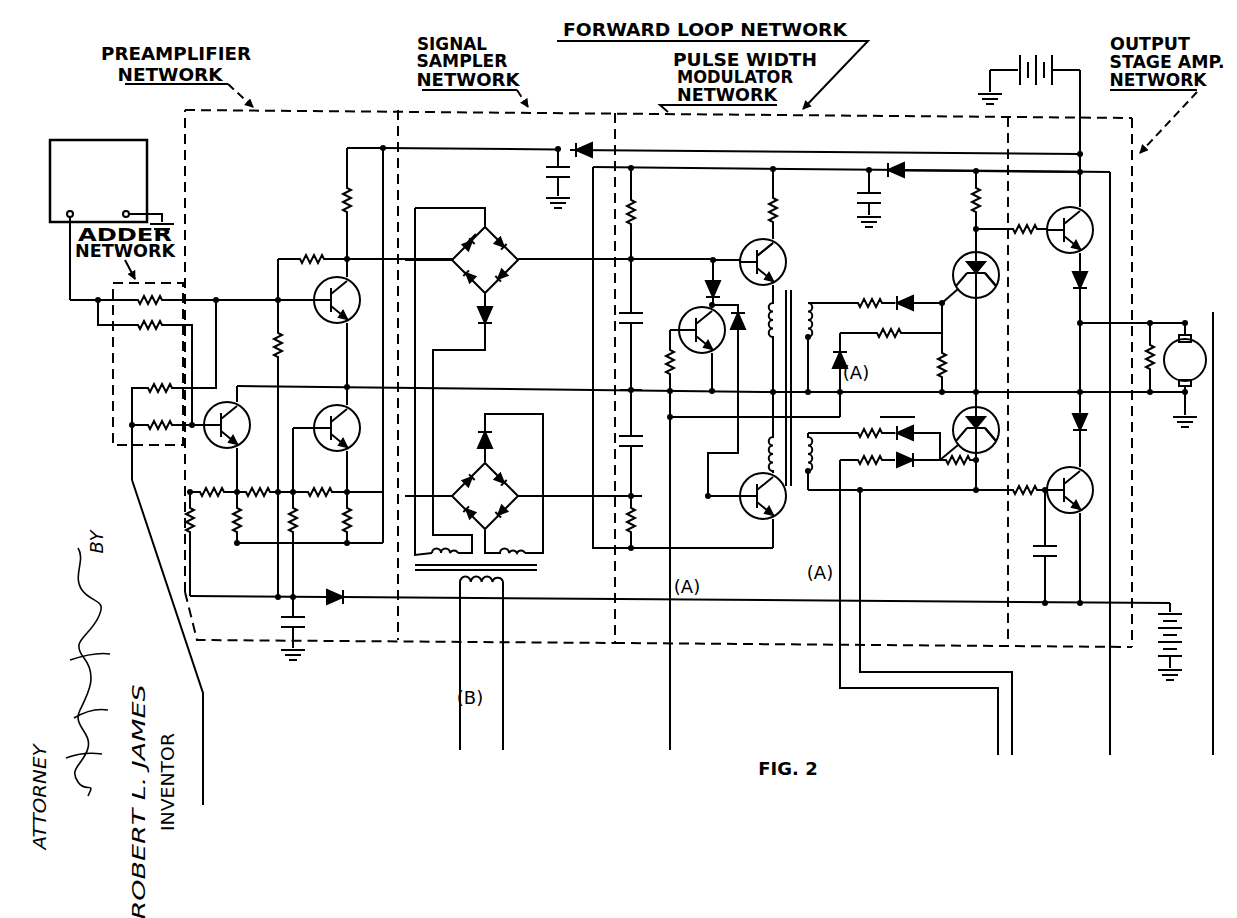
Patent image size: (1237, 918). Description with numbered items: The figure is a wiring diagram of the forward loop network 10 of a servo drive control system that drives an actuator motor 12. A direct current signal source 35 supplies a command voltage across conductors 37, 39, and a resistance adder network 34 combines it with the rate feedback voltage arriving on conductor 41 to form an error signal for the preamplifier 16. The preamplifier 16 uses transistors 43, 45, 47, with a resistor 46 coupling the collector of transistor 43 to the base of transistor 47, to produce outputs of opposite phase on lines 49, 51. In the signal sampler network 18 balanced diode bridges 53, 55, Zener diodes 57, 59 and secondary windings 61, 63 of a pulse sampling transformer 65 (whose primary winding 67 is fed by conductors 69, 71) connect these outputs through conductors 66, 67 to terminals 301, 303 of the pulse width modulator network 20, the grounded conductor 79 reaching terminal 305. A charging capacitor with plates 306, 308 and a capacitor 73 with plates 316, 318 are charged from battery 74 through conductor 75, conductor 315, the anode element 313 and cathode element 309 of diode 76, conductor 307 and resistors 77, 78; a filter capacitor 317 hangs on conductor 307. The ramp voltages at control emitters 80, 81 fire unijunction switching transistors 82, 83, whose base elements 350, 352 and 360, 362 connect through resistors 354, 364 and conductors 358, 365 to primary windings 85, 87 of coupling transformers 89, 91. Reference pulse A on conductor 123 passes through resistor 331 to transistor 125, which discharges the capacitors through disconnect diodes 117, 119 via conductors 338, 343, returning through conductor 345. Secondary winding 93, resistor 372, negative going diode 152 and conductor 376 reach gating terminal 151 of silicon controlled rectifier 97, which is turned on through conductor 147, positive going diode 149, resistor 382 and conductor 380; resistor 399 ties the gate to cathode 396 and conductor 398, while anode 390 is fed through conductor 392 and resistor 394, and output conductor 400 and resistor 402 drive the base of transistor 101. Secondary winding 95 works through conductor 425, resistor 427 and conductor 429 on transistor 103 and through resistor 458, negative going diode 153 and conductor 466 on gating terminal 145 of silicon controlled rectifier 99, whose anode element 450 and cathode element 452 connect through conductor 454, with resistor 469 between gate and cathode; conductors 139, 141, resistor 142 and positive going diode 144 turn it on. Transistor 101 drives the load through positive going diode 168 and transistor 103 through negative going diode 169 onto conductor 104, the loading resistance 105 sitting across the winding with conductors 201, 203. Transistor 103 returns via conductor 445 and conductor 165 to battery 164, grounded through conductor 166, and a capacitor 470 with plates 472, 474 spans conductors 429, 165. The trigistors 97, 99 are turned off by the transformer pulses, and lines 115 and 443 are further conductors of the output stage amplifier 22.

The forward loop network 10 is at (176, 121).
The actuator motor 12 is at (1187, 368).
The preamplifier 16 is at (318, 106).
The signal sampler network 18 is at (596, 106).
The pulse width modulator network 20 is at (876, 114).
The output stage amplifier 22 is at (1140, 203).
The resistance adder network 34 is at (113, 370).
The direct current signal source 35 is at (88, 139).
The input conductor 37 is at (70, 276).
The conductor 39 is at (152, 212).
The conductor 41 is at (132, 470).
The transistor 43 is at (232, 401).
The transistor 45 is at (323, 288).
The resistor 46 is at (258, 492).
The transistor 47 is at (320, 416).
The output line 49 is at (463, 250).
The output line 51 is at (362, 492).
The balanced diode bridge 53 is at (475, 270).
The balanced diode bridge 55 is at (475, 506).
The Zener diode 57 is at (493, 313).
The Zener diode 59 is at (493, 440).
The secondary winding 61 is at (441, 560).
The secondary winding 63 is at (516, 560).
The pulse sampling transformer 65 is at (556, 568).
The output conductor 66 is at (554, 257).
The primary winding 67 is at (478, 589).
The conductor 69 is at (504, 673).
The conductor 71 is at (458, 668).
The capacitor 73 is at (638, 447).
The battery 74 is at (1028, 46).
The conductor 75 is at (1083, 141).
The diode 76 is at (900, 181).
The resistor 77 is at (645, 213).
The resistor 78 is at (637, 525).
The conductor 79 is at (1035, 391).
The control emitter 80 is at (740, 259).
The control emitter 81 is at (717, 500).
The unijunction switching transistor 82 is at (753, 246).
The unijunction switching transistor 83 is at (749, 512).
The primary winding 85 is at (766, 385).
The primary winding 87 is at (762, 485).
The coupling transformer 89 is at (801, 287).
The coupling transformer 91 is at (787, 495).
The secondary winding 93 is at (815, 320).
The secondary winding 95 is at (816, 453).
The silicon controlled rectifier 97 is at (987, 346).
The silicon controlled rectifier 99 is at (978, 455).
The transistor 101 is at (1061, 216).
The transistor 103 is at (1061, 476).
The conductor 104 is at (1080, 329).
The resistance loading 105 is at (1152, 336).
The output lead 115 is at (1111, 252).
The disconnect diode 117 is at (708, 291).
The disconnect diode 119 is at (739, 312).
The conductor 123 is at (672, 445).
The transistor 125 is at (695, 318).
The conductor 139 is at (863, 582).
The conductor 141 is at (998, 712).
The resistor 142 is at (872, 464).
The positive going diode 144 is at (915, 465).
The gating terminal 145 is at (906, 433).
The conductor 147 is at (846, 411).
The positive going diode 149 is at (856, 360).
The gating terminal 151 is at (954, 292).
The negative going diode 152 is at (899, 300).
The negative going diode 153 is at (897, 412).
The battery 164 is at (1192, 648).
The conductor 165 is at (1166, 604).
The conductor 166 is at (1163, 656).
The positive going diode 168 is at (1069, 280).
The negative going diode 169 is at (1069, 424).
The conductor 201 is at (1213, 503).
The grounded conductor 203 is at (1182, 422).
The terminal 301 is at (640, 258).
The terminal 303 is at (638, 496).
The terminal 305 is at (640, 389).
The plate 306 is at (620, 315).
The conductor 307 is at (663, 167).
The plate 308 is at (620, 324).
The cathode element 309 is at (889, 166).
The anode element 313 is at (905, 166).
The conductor 315 is at (1020, 171).
The plate 316 is at (621, 441).
The filter capacitor 317 is at (856, 198).
The plate 318 is at (634, 436).
The resistor 331 is at (668, 356).
The conductor 338 is at (711, 264).
The conductor 343 is at (738, 415).
The conductor 345 is at (677, 361).
The base element 350 is at (773, 250).
The base element 352 is at (778, 270).
The resistor 354 is at (768, 206).
The conductor 358 is at (777, 342).
The base element 360 is at (762, 541).
The base element 362 is at (789, 506).
The resistor 364 is at (791, 511).
The conductor 365 is at (778, 413).
The resistor 372 is at (864, 298).
The conductor 376 is at (914, 294).
The conductor 380 is at (958, 326).
The resistor 382 is at (891, 322).
The anode 390 is at (960, 262).
The conductor 392 is at (973, 229).
The resistor 394 is at (967, 203).
The cathode 396 is at (1000, 289).
The conductor 398 is at (944, 359).
The resistor 399 is at (957, 382).
The output conductor 400 is at (979, 230).
The resistor 402 is at (1026, 234).
The conductor 425 is at (866, 491).
The resistor 427 is at (1025, 496).
The conductor 429 is at (1046, 490).
The lead 443 is at (1080, 380).
The conductor 445 is at (1086, 560).
The anode element 450 is at (969, 412).
The cathode element 452 is at (997, 443).
The conductor 454 is at (972, 466).
The resistor 458 is at (857, 430).
The conductor 466 is at (922, 436).
The resistor 469 is at (975, 492).
The capacitor 470 is at (1031, 553).
The plate 472 is at (1033, 546).
The plate 474 is at (1033, 557).